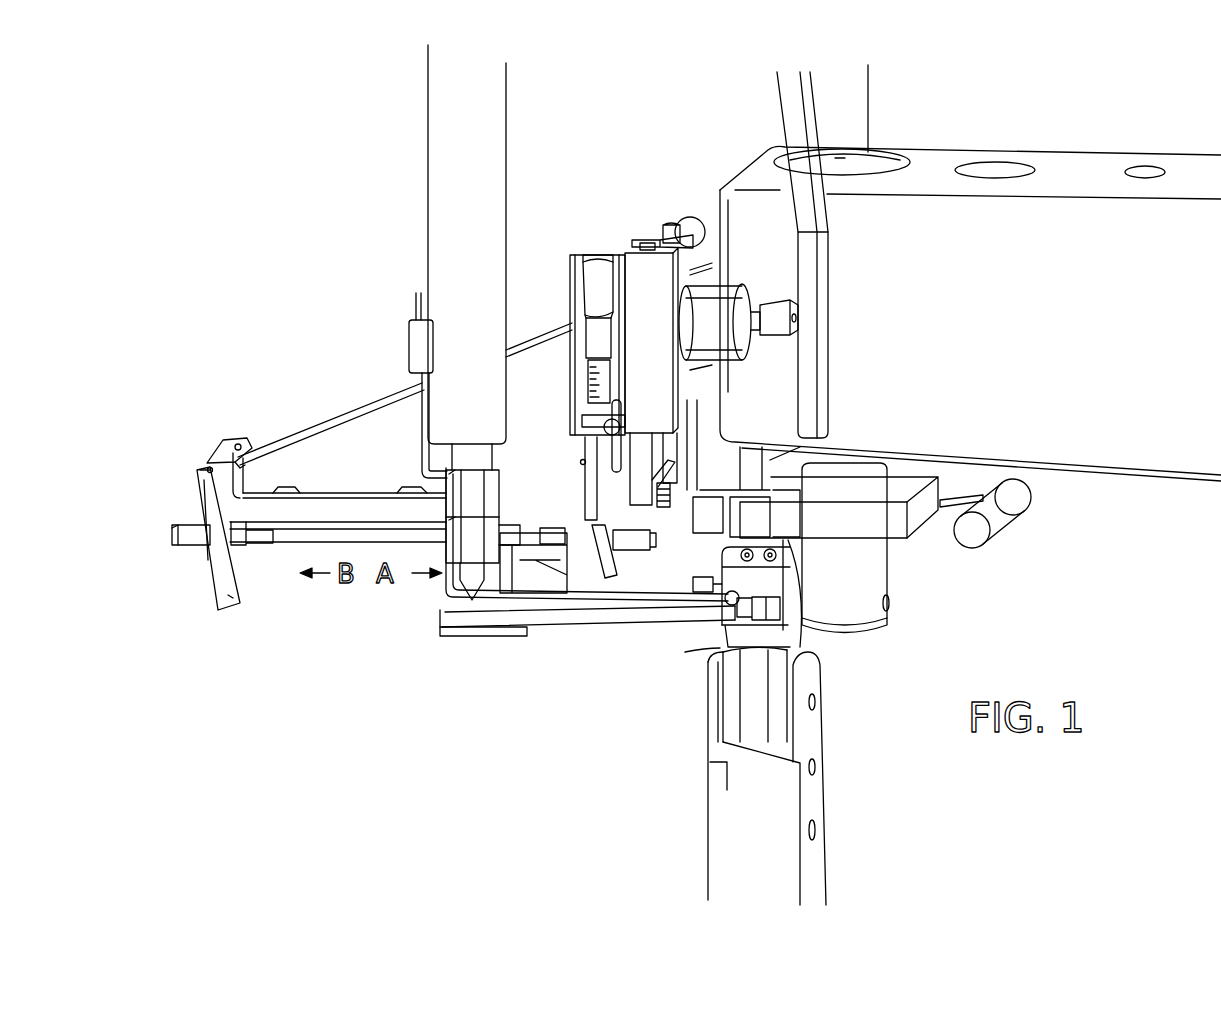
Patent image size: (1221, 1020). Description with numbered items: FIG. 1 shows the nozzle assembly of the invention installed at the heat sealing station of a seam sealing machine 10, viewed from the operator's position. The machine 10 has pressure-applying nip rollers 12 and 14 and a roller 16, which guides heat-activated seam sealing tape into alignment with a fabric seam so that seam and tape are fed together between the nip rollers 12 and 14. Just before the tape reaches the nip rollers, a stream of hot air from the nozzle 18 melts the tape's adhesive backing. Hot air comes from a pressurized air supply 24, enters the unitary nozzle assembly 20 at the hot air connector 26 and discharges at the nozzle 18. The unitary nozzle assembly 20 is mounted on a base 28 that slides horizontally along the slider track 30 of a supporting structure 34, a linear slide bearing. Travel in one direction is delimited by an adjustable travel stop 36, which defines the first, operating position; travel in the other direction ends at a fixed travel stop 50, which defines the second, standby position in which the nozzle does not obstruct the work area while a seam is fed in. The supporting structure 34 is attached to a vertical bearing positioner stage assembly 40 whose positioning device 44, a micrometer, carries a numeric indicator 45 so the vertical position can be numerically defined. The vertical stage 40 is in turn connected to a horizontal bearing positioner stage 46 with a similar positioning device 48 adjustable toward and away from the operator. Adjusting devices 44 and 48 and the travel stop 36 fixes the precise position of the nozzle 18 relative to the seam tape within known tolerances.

The seam sealing machine 10 is at (922, 118).
The nip roller 12 is at (787, 643).
The nip roller 14 is at (793, 647).
The roller 16 is at (708, 312).
The nozzle 18 is at (720, 627).
The unitary nozzle assembly 20 is at (618, 625).
The pressurized air supply 24 is at (487, 114).
The hot air connector 26 is at (462, 548).
The base 28 is at (477, 630).
The slider track 30 is at (308, 527).
The supporting structure 34 is at (300, 430).
The adjustable travel stop 36 is at (657, 543).
The vertical bearing positioner stage assembly 40 is at (566, 277).
The positioning device 44 is at (594, 277).
The numeric indicator 45 is at (587, 377).
The horizontal bearing positioner stage 46 is at (640, 243).
The positioning device 48 is at (687, 225).
The fixed travel stop 50 is at (174, 543).